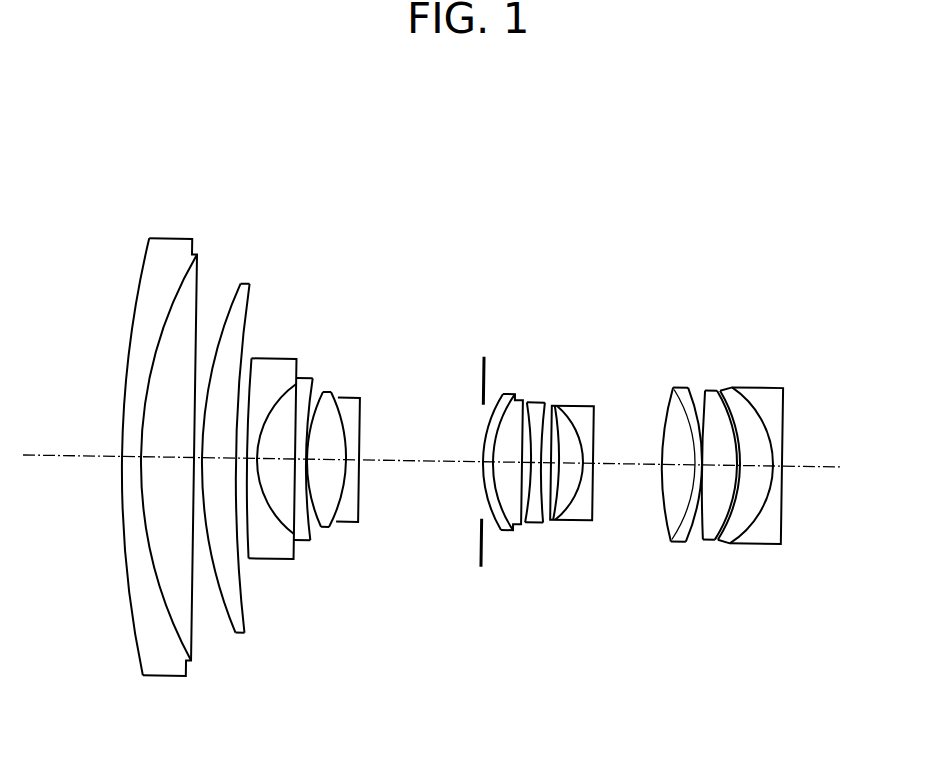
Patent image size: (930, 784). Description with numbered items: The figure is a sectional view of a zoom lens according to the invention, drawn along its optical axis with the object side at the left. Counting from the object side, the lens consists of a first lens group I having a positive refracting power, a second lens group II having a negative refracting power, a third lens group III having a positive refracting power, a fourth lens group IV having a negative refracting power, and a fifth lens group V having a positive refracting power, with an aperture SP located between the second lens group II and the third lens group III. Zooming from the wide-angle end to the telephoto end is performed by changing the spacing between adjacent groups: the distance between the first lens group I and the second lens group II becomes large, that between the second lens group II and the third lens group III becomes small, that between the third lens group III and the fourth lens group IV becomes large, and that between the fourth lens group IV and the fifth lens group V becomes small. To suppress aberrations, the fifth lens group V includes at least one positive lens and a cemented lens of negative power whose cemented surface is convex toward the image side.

The first lens group I is at (122, 685).
The second lens group II is at (363, 687).
The third lens group III is at (480, 690).
The fourth lens group IV is at (593, 690).
The fifth lens group V is at (678, 693).
The aperture SP is at (483, 350).